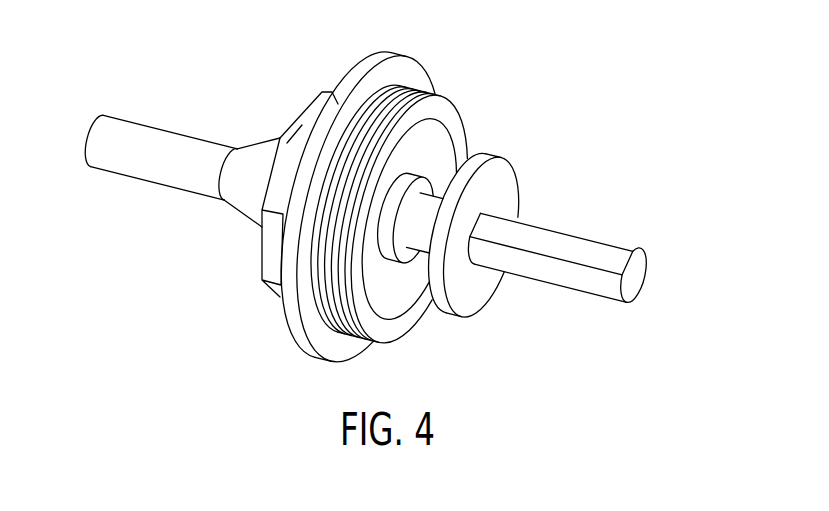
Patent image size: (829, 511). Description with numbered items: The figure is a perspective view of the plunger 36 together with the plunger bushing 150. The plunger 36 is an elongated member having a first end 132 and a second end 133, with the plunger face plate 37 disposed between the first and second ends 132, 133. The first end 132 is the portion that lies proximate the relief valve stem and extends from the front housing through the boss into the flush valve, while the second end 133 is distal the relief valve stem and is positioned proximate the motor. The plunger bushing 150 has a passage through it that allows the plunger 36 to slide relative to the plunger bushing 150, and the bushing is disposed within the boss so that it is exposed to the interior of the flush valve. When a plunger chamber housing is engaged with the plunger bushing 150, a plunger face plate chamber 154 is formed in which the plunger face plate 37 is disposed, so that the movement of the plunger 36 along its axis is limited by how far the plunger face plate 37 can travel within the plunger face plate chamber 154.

The first end 132 is at (92, 132).
The plunger bushing 150 is at (400, 89).
The plunger face plate chamber 154 is at (438, 144).
The plunger face plate 37 is at (505, 185).
The plunger 36 is at (550, 273).
The second end 133 is at (634, 275).